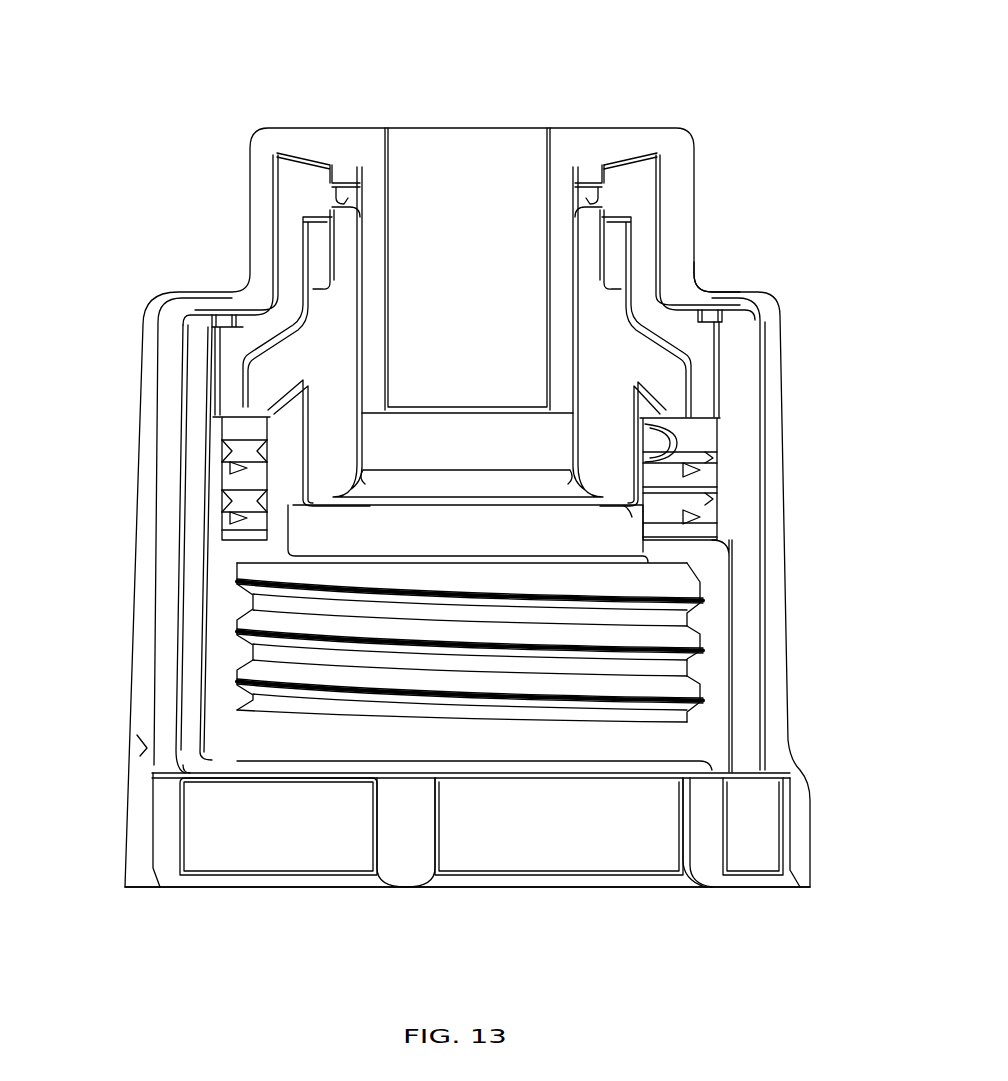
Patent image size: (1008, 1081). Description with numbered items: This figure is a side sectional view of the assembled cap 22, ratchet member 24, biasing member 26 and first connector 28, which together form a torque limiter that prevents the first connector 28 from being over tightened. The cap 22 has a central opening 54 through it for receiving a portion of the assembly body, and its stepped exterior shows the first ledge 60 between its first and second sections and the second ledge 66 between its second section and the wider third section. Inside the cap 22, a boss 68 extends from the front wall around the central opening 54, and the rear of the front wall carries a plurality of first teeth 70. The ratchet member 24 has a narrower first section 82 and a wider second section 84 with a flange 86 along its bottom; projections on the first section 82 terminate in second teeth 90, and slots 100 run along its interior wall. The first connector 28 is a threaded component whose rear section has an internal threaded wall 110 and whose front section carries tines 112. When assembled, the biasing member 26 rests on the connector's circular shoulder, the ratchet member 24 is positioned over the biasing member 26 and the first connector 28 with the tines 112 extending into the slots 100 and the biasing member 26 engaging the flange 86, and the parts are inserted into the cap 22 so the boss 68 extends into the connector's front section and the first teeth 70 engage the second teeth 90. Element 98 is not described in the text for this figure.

The cap 22 is at (266, 130).
The ratchet member 24 is at (280, 285).
The biasing member 26 is at (240, 455).
The first connector 28 is at (230, 640).
The central opening 54 is at (505, 147).
The first ledge 60 is at (708, 290).
The second ledge 66 is at (792, 755).
The boss 68 is at (380, 190).
The first teeth 70 is at (598, 160).
The first section 82 is at (650, 236).
The second section 84 is at (718, 374).
The flange 86 is at (722, 425).
The second teeth 90 is at (640, 172).
The connecting wall 98 is at (698, 340).
The slots 100 is at (272, 362).
The internal threaded wall 110 is at (278, 622).
The tines 112 is at (295, 438).